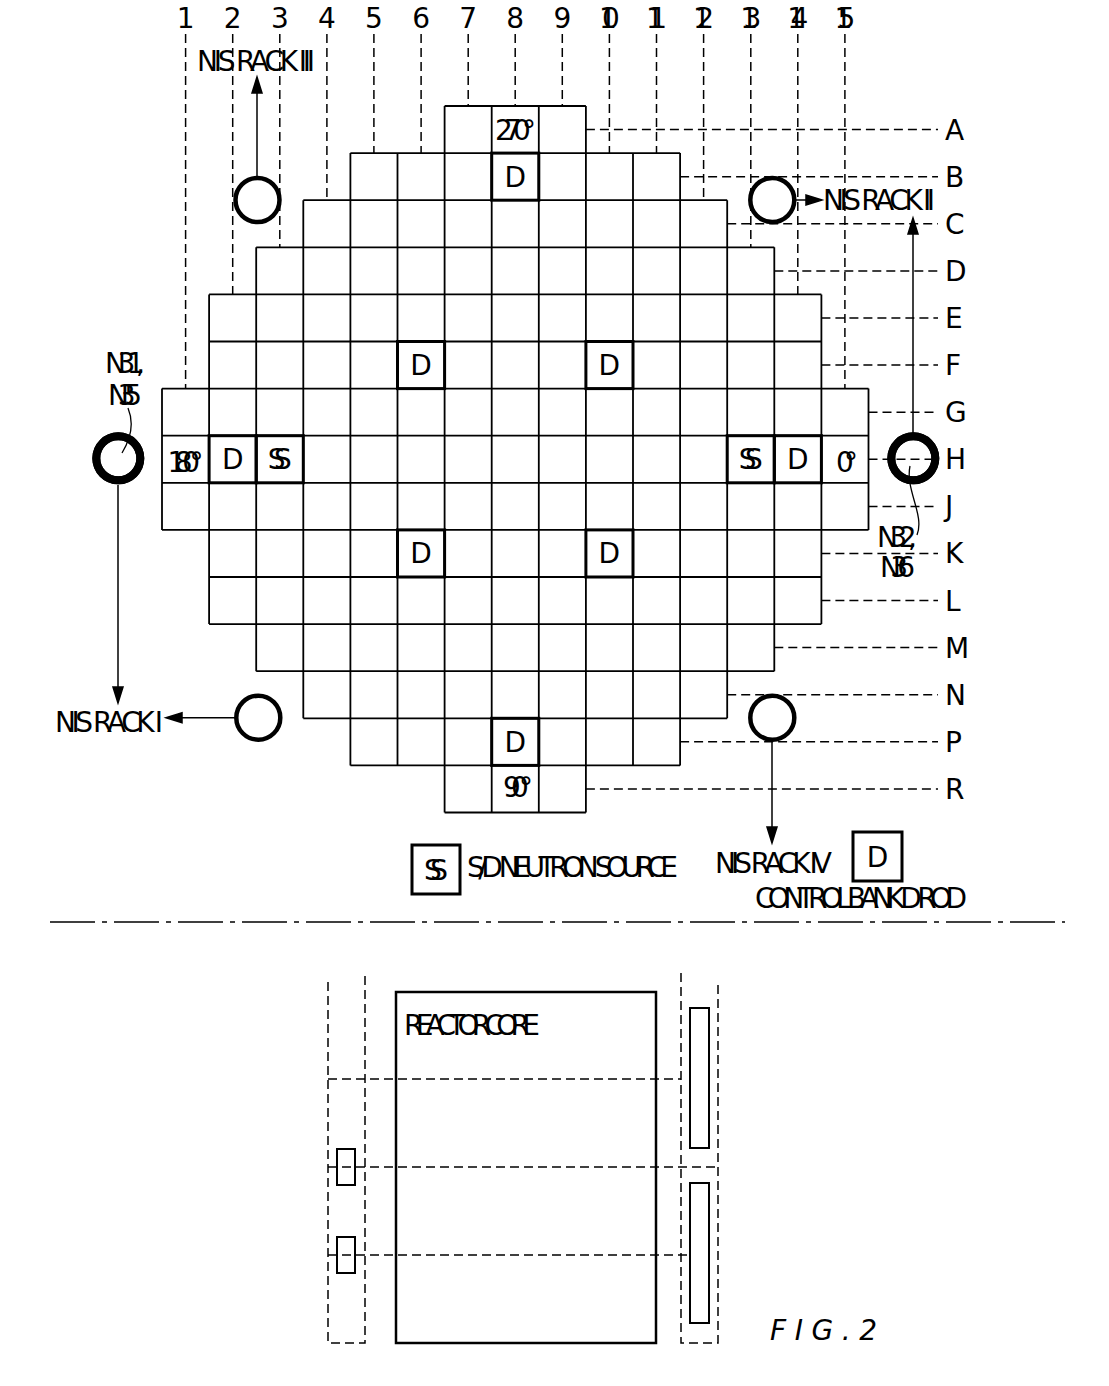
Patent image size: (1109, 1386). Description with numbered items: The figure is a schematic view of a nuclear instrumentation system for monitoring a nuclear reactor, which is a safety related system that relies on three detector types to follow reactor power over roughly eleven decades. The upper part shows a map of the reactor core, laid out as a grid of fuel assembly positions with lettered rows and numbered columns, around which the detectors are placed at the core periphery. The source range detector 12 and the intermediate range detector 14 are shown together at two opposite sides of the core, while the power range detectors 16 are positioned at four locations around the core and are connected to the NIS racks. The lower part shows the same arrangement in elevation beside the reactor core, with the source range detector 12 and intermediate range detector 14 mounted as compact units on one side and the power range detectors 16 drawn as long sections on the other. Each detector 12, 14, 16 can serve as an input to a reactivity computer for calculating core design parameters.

The source range detector 12 is at (101, 442).
The intermediate range detector 14 is at (107, 481).
The power range detector 16 is at (236, 201).